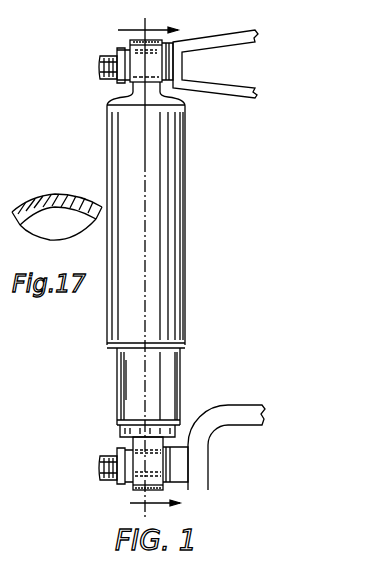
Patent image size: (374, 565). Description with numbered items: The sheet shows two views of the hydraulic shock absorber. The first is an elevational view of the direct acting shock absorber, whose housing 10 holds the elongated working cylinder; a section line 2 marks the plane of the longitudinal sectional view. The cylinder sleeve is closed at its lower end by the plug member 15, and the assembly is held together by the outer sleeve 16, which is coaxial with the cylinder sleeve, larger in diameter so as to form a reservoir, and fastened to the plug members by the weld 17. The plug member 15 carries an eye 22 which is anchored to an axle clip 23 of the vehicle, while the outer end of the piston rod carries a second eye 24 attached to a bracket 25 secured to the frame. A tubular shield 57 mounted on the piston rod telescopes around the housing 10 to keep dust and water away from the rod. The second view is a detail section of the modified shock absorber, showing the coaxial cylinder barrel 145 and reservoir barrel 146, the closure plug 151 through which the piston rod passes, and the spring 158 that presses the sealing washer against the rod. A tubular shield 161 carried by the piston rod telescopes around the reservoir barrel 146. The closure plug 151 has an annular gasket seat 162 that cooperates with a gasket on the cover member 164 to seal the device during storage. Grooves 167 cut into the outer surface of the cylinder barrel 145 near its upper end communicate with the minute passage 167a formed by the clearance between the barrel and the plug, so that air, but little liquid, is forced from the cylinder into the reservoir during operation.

In FIG. 1, the section line 2- 2 is at (154, 269).
In FIG. 1, the housing 10 is at (182, 368).
In FIG. 1, the plug member 15 is at (120, 436).
In FIG. 1, the outer sleeve 16 is at (122, 365).
In FIG. 1, the weld 17 is at (117, 424).
In FIG. 1, the eye 22 is at (122, 480).
In FIG. 1, the axle clip 23 is at (243, 416).
In FIG. 1, the eye 24 is at (140, 63).
In FIG. 1, the bracket 25 is at (216, 90).
In FIG. 1, the tubular shield 57 is at (186, 184).
In FIG. 17, the cylinder barrel 145 is at (0, 510).
In FIG. 17, the reservoir barrel 146 is at (22, 556).
In FIG. 17, the closure plug 151 is at (0, 258).
In FIG. 17, the spring 158 is at (17, 242).
In FIG. 17, the tubular shield 161 is at (0, 372).
In FIG. 17, the annular gasket seat 162 is at (4, 185).
In FIG. 17, the cover member 164 is at (0, 207).
In FIG. 17, the grooves 167 is at (50, 201).
In FIG. 17, the minute passage 167a is at (64, 304).